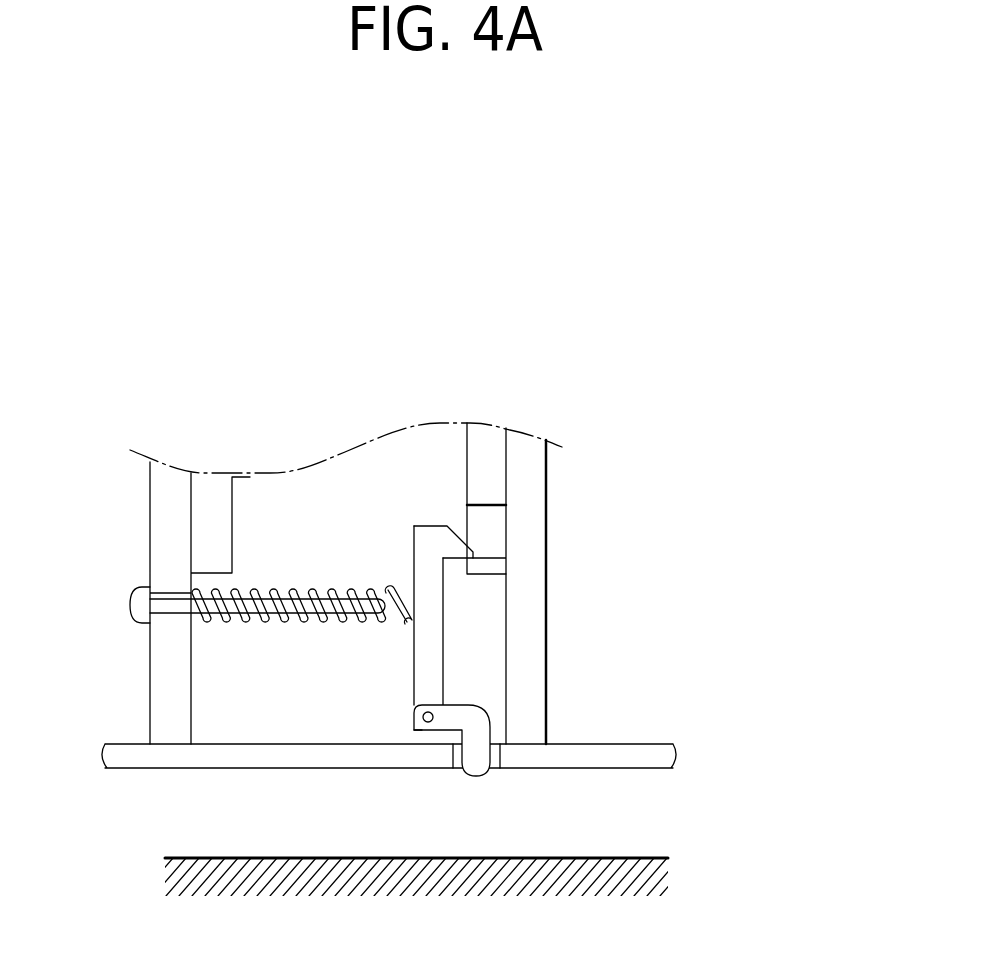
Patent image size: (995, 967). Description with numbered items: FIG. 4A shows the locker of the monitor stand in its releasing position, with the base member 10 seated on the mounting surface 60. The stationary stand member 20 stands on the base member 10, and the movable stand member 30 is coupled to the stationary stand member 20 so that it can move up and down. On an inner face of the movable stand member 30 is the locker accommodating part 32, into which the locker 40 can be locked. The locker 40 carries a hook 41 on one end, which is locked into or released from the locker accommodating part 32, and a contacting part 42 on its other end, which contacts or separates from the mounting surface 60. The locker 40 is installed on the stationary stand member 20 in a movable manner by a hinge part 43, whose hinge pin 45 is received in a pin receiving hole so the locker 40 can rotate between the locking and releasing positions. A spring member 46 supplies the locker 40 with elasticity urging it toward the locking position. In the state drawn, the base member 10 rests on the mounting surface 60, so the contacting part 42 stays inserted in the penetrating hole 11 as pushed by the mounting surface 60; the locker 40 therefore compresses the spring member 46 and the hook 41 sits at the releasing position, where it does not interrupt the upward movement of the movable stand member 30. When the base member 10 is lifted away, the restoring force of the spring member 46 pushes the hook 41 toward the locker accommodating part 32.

The base member 10 is at (619, 757).
The penetrating hole 11 is at (457, 762).
The stationary stand member 20 is at (540, 612).
The movable stand member 30 is at (497, 469).
The locker accommodating part 32 is at (497, 520).
The locker 40 is at (455, 615).
The hook 41 is at (447, 547).
The contacting part 42 is at (477, 762).
The hinge part 43 is at (416, 733).
The hinge pin 45 is at (437, 747).
The spring member 46 is at (235, 628).
The mounting surface 60 is at (630, 868).